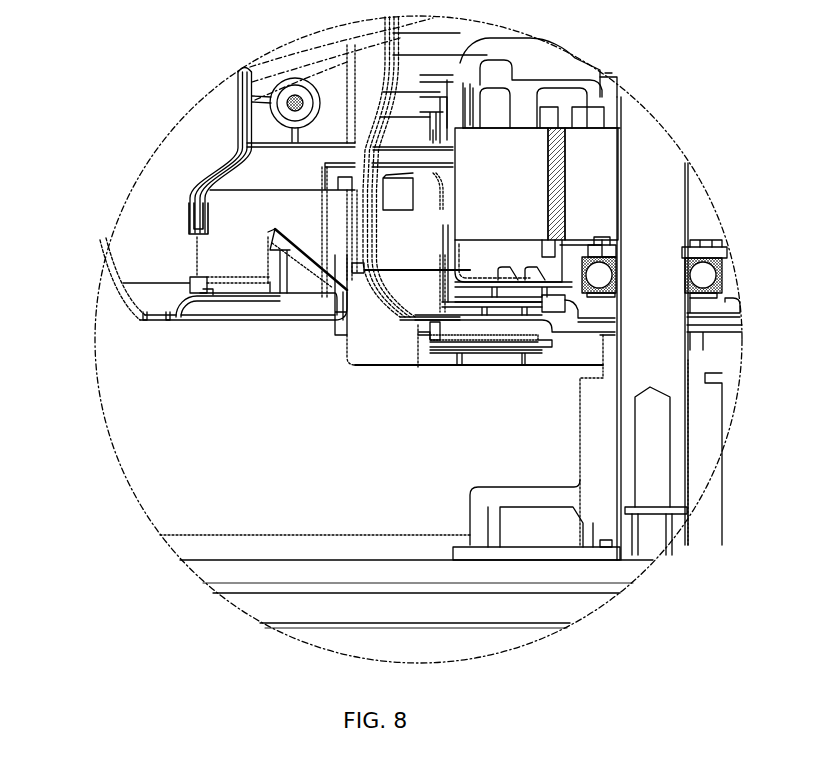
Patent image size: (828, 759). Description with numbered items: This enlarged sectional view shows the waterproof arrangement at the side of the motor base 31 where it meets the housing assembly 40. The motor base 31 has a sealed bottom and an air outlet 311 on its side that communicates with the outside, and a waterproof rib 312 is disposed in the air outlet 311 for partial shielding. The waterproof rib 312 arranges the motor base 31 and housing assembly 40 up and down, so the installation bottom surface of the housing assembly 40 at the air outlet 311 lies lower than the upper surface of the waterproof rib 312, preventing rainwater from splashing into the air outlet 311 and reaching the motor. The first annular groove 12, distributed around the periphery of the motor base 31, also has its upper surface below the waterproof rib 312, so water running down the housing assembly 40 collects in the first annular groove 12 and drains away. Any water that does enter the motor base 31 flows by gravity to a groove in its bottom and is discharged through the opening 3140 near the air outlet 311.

The housing assembly 40 is at (237, 121).
The waterproof rib 312 is at (192, 205).
The air outlet 311 is at (197, 250).
The first annular groove 12 is at (163, 300).
The motor base 31 is at (368, 337).
The opening 3140 is at (432, 337).